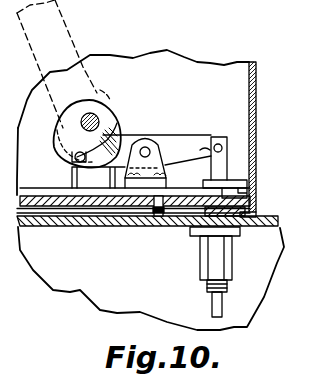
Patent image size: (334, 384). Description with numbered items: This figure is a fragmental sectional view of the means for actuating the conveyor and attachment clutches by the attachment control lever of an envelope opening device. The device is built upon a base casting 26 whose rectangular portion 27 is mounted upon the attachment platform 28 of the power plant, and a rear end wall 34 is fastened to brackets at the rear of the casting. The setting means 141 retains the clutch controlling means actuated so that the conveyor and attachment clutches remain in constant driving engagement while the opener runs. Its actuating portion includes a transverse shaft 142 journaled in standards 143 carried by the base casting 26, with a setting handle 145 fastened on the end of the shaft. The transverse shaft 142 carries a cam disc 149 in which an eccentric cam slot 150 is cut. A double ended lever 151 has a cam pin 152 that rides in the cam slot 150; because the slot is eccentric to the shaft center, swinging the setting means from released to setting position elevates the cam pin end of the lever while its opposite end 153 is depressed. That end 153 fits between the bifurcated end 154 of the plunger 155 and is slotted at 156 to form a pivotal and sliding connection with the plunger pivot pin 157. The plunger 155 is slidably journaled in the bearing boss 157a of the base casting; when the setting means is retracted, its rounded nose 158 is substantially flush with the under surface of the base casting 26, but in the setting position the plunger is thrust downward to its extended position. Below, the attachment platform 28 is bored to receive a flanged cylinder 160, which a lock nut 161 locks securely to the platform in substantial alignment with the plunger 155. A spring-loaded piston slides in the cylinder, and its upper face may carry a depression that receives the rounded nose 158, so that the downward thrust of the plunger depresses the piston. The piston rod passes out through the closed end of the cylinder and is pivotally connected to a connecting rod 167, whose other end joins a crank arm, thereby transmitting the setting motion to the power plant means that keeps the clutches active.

The base casting 26 is at (155, 214).
The rectangular portion 27 is at (125, 210).
The attachment platform 28 is at (70, 227).
The rear end wall 34 is at (257, 103).
The setting means 141 is at (174, 97).
The transverse shaft 142 is at (95, 111).
The standards 143 is at (97, 192).
The setting handle 145 is at (63, 37).
The cam disc 149 is at (107, 113).
The cam slot 150 is at (125, 117).
The double ended lever 151 is at (172, 134).
The cam pin 152 is at (70, 166).
The end of double lever 153 is at (200, 135).
The bifurcated end 154 is at (228, 160).
The plunger 155 is at (223, 176).
The slot 156 is at (191, 151).
The plunger pivot pin 157 is at (222, 147).
The bearing boss 157a is at (222, 183).
The rounded nose 158 is at (249, 207).
The flanged cylinder 160 is at (227, 260).
The lock nut 161 is at (244, 231).
The connecting rod 167 is at (222, 305).